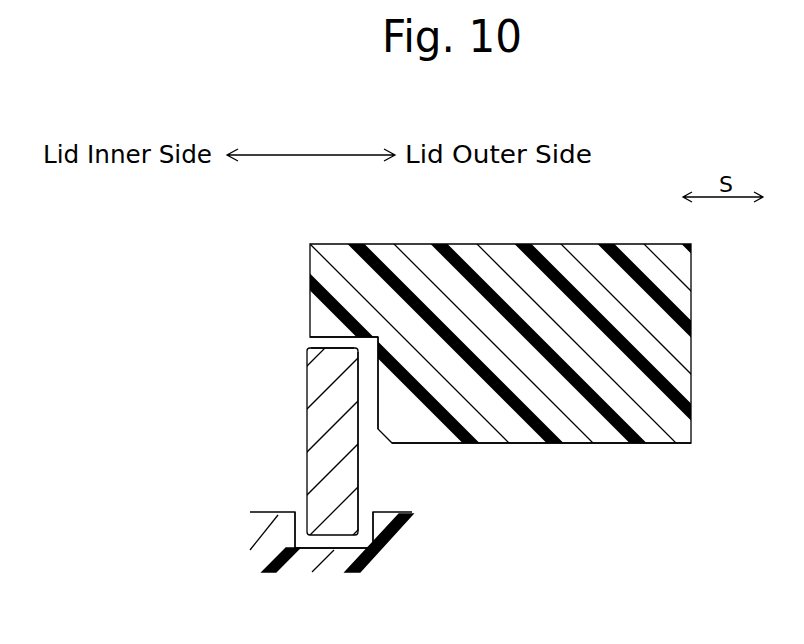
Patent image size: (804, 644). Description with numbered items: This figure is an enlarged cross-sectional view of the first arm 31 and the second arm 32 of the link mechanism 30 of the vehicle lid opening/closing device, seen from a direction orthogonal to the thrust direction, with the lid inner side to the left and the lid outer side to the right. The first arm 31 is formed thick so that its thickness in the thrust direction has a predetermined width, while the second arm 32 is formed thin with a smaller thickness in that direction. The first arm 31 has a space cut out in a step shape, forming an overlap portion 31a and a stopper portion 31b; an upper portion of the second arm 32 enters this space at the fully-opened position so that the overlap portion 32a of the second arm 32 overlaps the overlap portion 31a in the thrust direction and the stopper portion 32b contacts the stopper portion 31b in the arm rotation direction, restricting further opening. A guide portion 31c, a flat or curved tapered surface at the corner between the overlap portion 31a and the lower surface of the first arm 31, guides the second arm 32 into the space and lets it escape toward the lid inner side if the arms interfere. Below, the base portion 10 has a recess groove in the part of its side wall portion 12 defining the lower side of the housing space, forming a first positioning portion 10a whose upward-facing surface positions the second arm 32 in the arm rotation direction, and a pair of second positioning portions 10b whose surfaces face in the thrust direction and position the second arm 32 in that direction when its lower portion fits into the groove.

The base portion 10 is at (355, 554).
The side wall portion 12 is at (393, 572).
The first positioning portion 10a is at (358, 549).
The second positioning portion 10b is at (302, 537).
The link mechanism 30 is at (494, 322).
The first arm 31 is at (669, 328).
The overlap portion 31a is at (376, 366).
The stopper portion 31b is at (359, 334).
The guide portion 31c is at (381, 432).
The second arm 32 is at (325, 423).
The overlap portion 32a is at (358, 362).
The stopper portion 32b is at (342, 346).